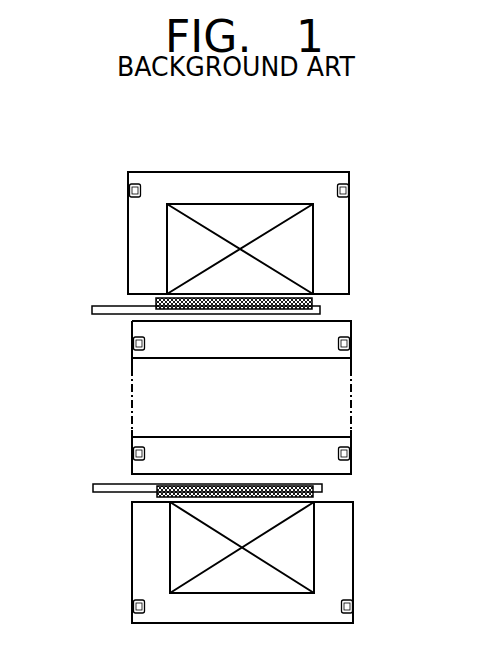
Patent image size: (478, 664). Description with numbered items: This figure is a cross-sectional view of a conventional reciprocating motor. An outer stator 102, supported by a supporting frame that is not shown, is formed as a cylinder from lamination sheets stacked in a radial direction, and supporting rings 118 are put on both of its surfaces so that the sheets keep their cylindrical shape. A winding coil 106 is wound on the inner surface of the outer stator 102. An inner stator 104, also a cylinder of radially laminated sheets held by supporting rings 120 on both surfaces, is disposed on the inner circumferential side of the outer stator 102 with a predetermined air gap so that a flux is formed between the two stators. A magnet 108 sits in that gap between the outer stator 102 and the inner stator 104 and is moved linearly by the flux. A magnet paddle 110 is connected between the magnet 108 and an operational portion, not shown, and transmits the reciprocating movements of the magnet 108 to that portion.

The outer stator 102 is at (311, 185).
The inner stator 104 is at (167, 352).
The winding coil 106 is at (244, 216).
The magnet 108 is at (313, 303).
The magnet paddle 110 is at (117, 309).
The supporting rings 118 is at (349, 189).
The supporting rings 120 is at (350, 340).